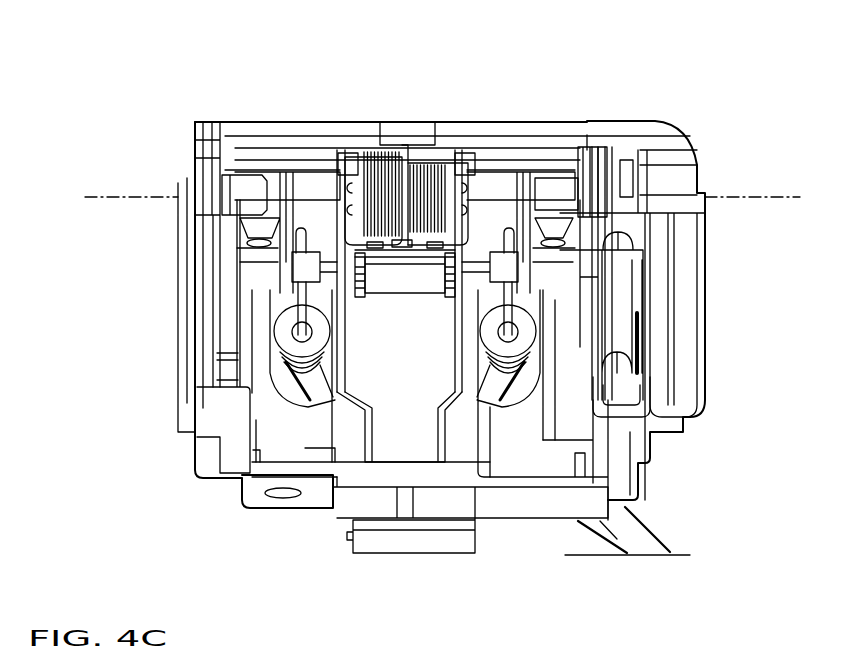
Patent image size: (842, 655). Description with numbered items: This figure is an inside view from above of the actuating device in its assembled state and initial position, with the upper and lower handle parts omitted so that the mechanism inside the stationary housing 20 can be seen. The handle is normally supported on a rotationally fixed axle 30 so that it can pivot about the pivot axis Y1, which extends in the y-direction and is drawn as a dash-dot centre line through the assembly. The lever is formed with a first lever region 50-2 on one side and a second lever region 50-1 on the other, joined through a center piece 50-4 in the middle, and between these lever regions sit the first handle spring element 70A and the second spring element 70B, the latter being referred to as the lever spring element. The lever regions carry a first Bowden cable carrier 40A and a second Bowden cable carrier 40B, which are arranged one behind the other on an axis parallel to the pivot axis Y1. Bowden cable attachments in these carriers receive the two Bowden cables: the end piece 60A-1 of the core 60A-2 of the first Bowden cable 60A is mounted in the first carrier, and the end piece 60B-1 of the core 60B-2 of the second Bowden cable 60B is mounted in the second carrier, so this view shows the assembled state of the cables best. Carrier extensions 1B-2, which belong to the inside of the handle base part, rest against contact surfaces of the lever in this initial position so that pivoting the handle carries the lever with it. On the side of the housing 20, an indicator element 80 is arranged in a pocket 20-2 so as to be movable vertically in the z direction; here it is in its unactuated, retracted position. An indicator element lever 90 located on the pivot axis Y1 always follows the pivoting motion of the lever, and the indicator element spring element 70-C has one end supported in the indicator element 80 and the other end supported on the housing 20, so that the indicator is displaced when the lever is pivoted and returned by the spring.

The housing 20 is at (705, 221).
The pocket 20-2 is at (640, 397).
The rotationally fixed axle 30 is at (245, 190).
The first Bowden cable carrier 40A is at (340, 235).
The second Bowden cable carrier 40B is at (472, 235).
The first lever region 50-1 is at (510, 188).
The second lever region 50-2 is at (300, 188).
The center piece 50-4 is at (403, 278).
The carrier extensions 1B-2 is at (346, 165).
The first Bowden cable 60A is at (315, 392).
The end piece 60A-1 is at (303, 270).
The core 60A-2 is at (302, 313).
The second Bowden cable 60B is at (523, 390).
The end piece 60B-1 is at (505, 270).
The core 60B-2 is at (508, 312).
The first handle spring element 70A is at (378, 185).
The second spring element 70B is at (425, 185).
The indicator element spring element 70-C is at (602, 197).
The indicator element 80 is at (618, 308).
The indicator element lever 90 is at (560, 197).
The pivot axis Y1 is at (457, 198).